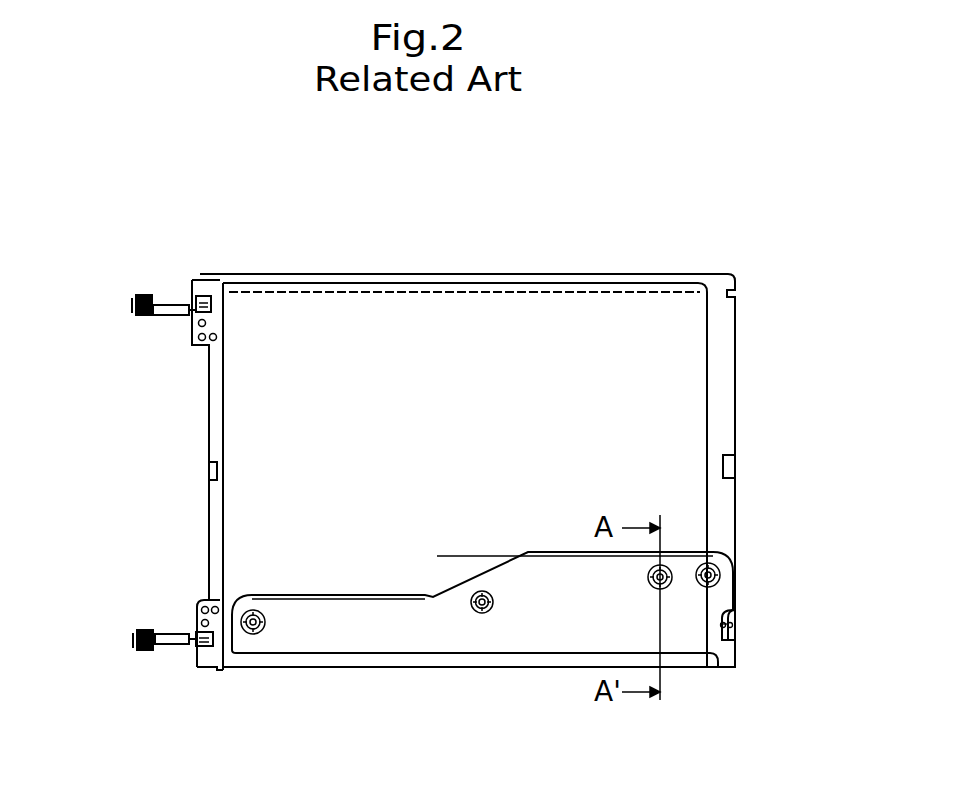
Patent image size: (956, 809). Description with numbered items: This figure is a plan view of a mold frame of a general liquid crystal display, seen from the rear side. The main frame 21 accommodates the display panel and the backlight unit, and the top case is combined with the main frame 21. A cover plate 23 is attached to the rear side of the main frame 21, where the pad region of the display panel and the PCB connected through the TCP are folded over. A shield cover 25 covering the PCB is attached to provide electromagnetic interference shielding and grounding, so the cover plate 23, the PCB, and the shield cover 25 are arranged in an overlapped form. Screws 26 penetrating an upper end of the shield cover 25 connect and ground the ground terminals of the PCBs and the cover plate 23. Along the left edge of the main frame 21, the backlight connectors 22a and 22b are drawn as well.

The main frame 21 is at (722, 403).
The backlight connector 22a is at (136, 298).
The backlight connector 22b is at (133, 633).
The cover plate 23 is at (692, 328).
The shield cover 25 is at (712, 607).
The screws 26 is at (717, 565).